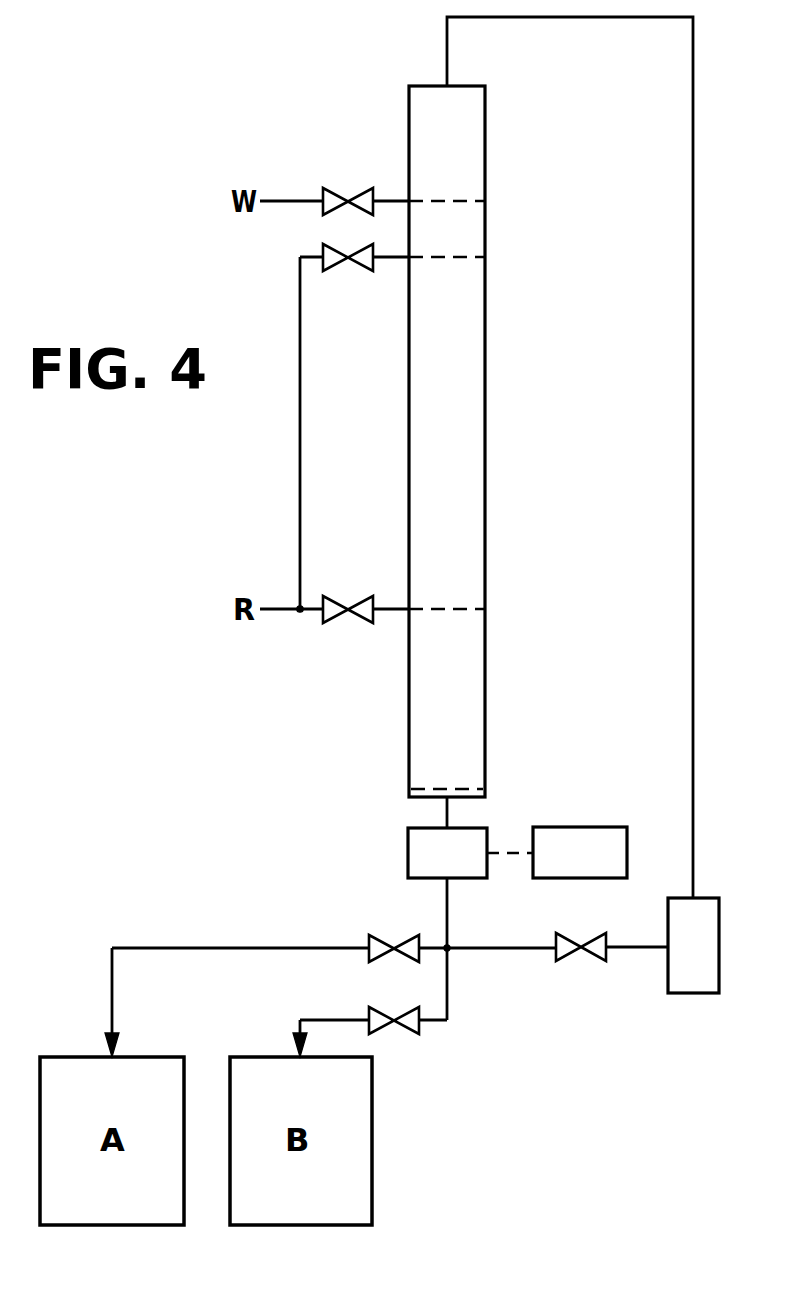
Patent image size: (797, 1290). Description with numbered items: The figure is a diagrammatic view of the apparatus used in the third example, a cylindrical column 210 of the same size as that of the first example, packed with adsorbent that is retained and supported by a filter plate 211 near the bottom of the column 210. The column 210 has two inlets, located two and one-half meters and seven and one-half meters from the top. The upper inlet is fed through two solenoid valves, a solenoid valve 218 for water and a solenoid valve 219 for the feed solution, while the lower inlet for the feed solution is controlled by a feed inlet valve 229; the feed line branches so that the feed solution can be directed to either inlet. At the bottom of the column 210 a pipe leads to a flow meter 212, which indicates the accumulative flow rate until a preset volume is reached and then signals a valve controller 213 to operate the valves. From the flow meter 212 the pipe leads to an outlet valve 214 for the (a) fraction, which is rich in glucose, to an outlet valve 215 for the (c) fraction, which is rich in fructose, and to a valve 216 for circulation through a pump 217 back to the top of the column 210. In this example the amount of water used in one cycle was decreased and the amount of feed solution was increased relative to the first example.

The cylindrical column 210 is at (447, 441).
The filter plate 211 is at (448, 786).
The flow meter 212 is at (408, 852).
The valve controller 213 is at (576, 827).
The outlet valve 214 is at (383, 937).
The outlet valve 215 is at (385, 1010).
The circulation valve 216 is at (574, 962).
The pump 217 is at (719, 940).
The solenoid valve 218 is at (345, 189).
The solenoid valve 219 is at (347, 271).
The feed inlet valve 229 is at (348, 597).